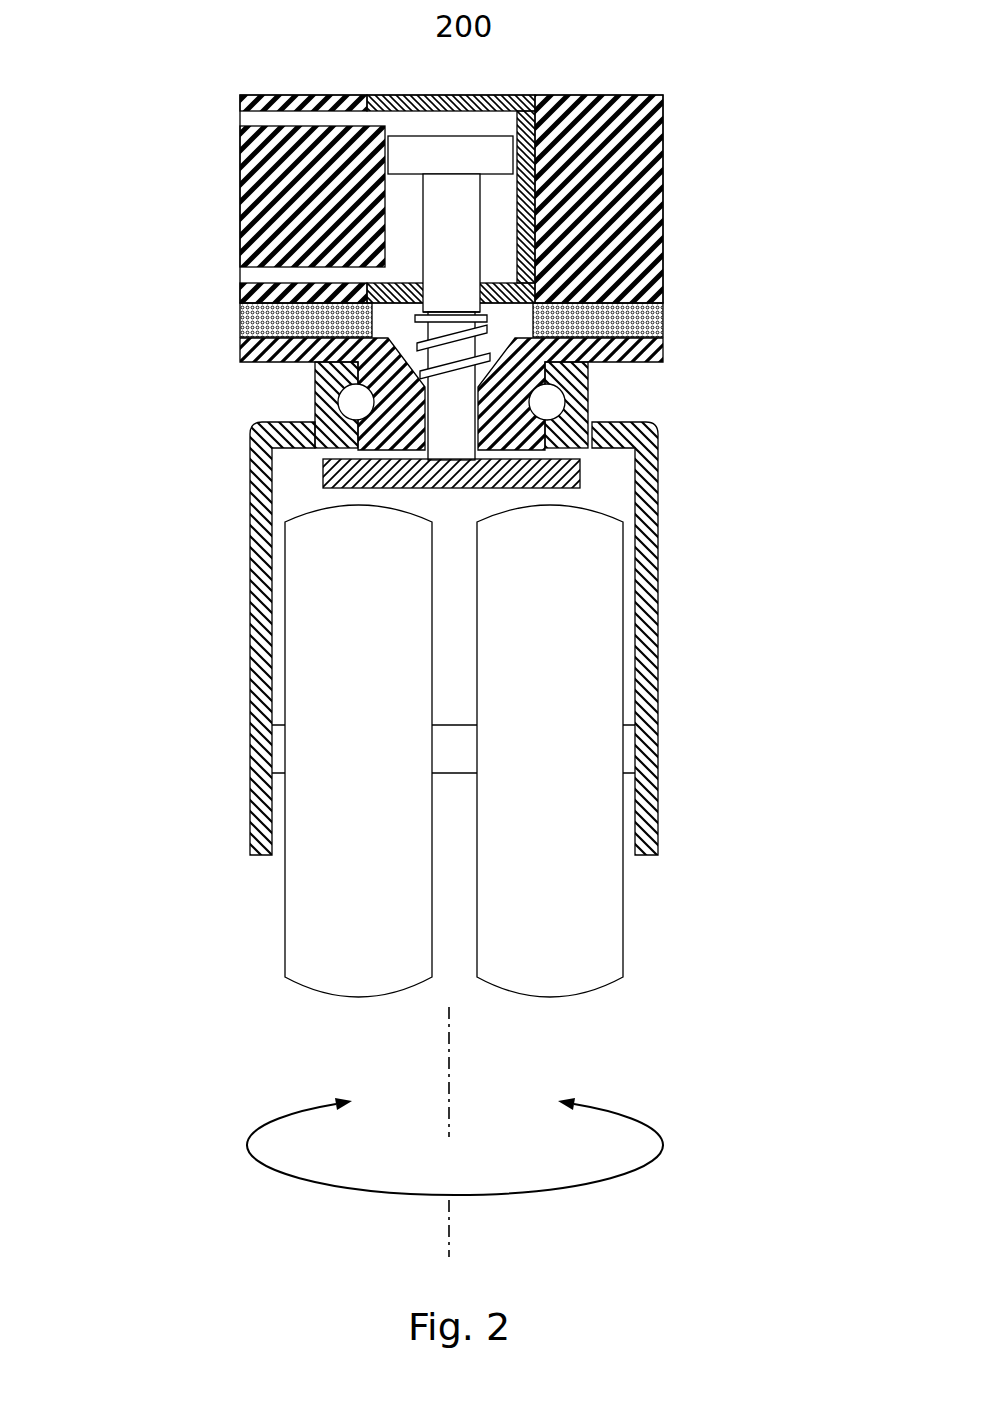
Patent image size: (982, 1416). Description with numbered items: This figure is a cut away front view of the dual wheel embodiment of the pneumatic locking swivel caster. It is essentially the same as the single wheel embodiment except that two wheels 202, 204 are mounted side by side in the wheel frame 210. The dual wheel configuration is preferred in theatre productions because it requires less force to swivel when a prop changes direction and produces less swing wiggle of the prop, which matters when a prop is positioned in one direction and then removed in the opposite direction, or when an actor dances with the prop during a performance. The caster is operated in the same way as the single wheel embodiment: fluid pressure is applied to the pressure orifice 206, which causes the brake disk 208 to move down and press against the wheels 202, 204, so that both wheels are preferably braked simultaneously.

The wheel 202 is at (271, 877).
The wheel 204 is at (463, 932).
The pressure orifice 206 is at (226, 117).
The brake disk 208 is at (309, 473).
The wheel frame 210 is at (236, 612).